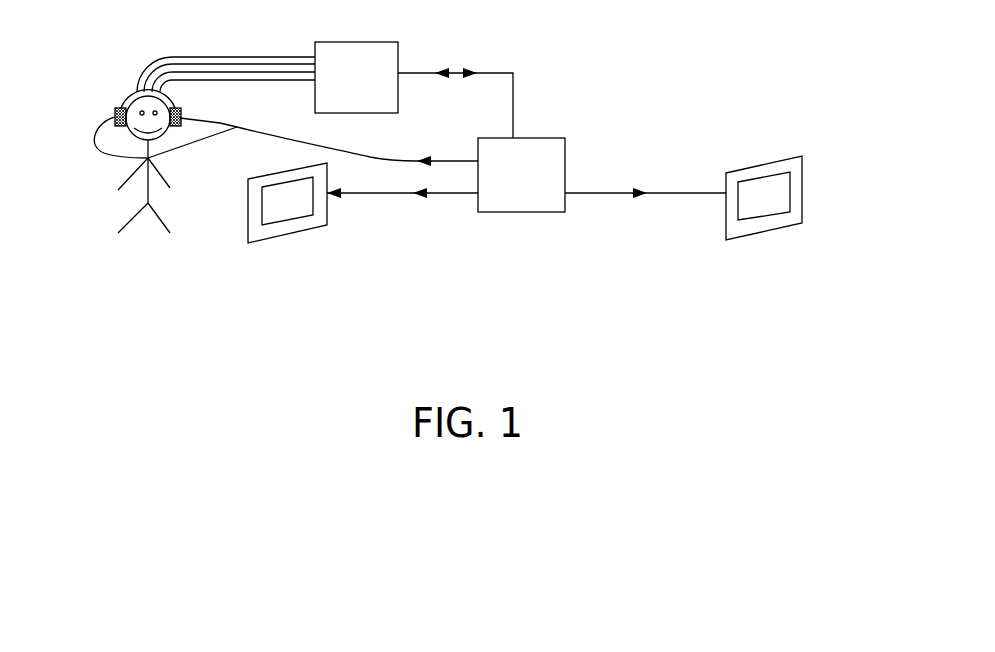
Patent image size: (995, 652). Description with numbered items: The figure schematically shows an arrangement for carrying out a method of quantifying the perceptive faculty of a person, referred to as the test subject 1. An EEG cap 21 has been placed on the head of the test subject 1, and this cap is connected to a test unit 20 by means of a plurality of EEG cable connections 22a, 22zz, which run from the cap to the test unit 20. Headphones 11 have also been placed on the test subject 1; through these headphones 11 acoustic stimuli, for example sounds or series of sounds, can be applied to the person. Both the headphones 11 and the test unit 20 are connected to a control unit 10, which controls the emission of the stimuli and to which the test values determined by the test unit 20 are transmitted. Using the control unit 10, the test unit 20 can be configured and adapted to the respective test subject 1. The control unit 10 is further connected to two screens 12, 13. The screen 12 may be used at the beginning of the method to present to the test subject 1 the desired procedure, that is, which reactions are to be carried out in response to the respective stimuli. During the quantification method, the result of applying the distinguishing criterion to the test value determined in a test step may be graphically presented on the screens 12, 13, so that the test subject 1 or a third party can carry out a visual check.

The test subject 1 is at (86, 211).
The headphones 11 is at (115, 111).
The EEG cap 21 is at (135, 90).
The EEG cable connection 22a is at (260, 57).
The EEG cable connection 22zz is at (238, 82).
The test unit 20 is at (356, 77).
The control unit 10 is at (481, 140).
The screen 12 is at (320, 182).
The screen 13 is at (795, 172).